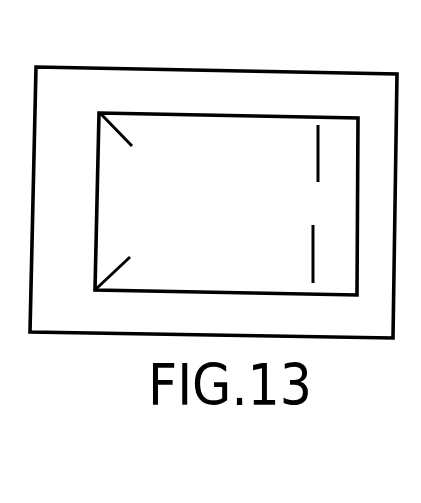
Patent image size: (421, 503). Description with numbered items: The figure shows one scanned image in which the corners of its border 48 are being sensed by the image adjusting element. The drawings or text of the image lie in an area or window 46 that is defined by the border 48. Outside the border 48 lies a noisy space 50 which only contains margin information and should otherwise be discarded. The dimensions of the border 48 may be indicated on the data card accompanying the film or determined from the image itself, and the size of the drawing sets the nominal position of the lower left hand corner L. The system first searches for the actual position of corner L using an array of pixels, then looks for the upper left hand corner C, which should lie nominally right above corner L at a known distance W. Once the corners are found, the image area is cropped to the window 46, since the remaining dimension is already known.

The noisy space 50 is at (48, 100).
The border 48 is at (226, 182).
The window 46 is at (210, 201).